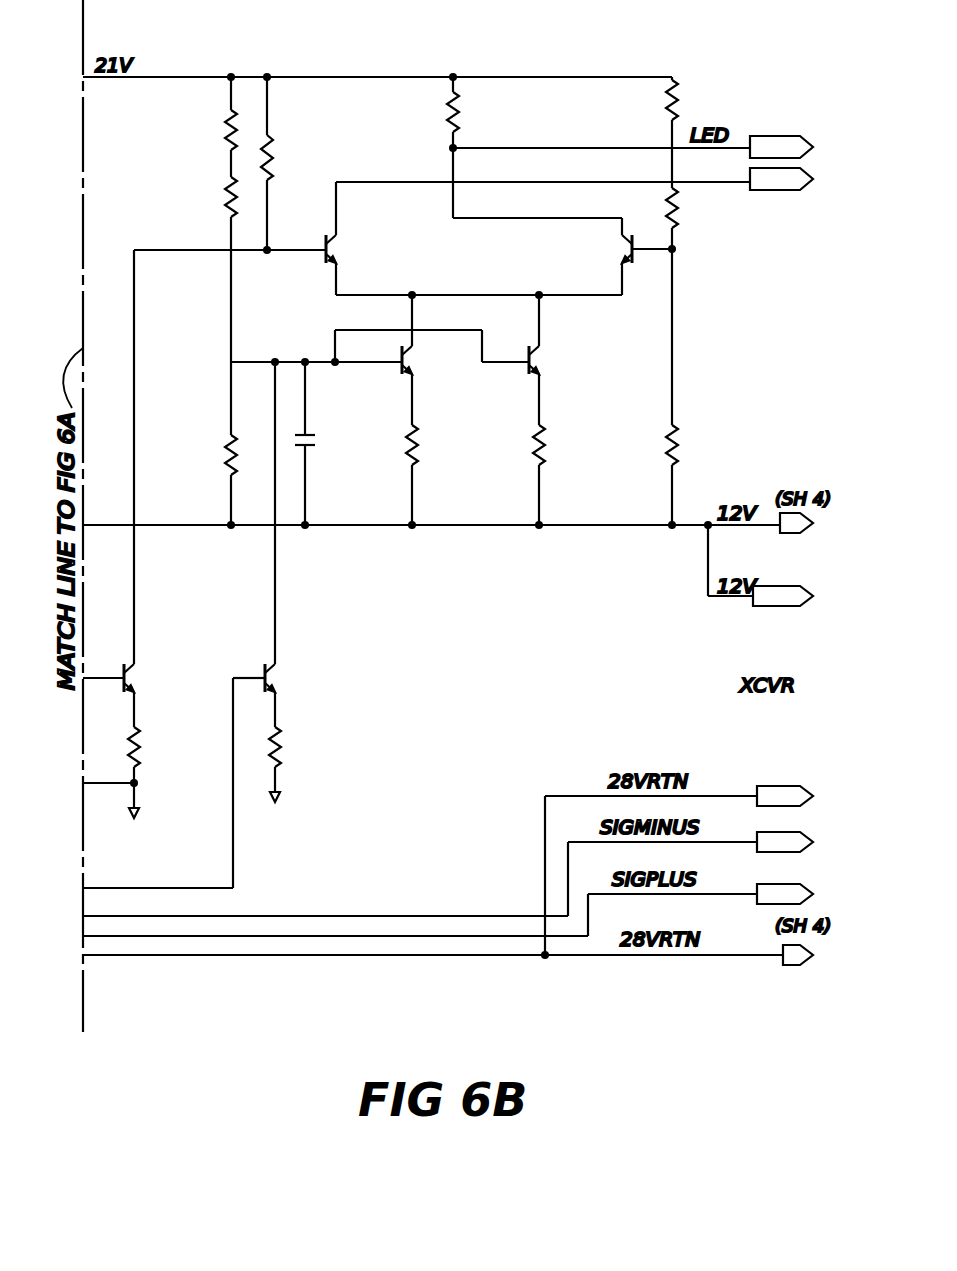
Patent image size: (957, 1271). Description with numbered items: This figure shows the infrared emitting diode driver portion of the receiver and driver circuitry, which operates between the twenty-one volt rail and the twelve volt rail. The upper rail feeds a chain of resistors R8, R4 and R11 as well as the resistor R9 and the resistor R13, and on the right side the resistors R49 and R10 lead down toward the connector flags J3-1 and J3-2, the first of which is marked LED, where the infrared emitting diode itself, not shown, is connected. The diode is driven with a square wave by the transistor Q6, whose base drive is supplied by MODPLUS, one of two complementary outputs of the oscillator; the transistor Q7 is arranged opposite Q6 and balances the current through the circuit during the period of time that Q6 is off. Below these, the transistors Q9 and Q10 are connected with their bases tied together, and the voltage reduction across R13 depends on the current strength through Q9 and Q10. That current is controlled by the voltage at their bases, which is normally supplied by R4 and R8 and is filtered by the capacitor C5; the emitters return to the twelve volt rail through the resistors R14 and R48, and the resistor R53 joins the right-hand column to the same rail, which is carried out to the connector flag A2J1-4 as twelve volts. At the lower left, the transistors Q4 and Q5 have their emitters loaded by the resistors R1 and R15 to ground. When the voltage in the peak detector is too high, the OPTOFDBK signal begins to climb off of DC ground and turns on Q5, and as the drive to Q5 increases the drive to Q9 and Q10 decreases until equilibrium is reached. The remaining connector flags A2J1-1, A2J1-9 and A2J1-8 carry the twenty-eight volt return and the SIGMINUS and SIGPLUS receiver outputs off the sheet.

The resistor R8 is at (216, 123).
The resistor R4 is at (216, 190).
The resistor R9 1.2K R9 is at (292, 157).
The resistor R13 is at (505, 108).
The resistor R49 100 ohm R49 is at (697, 97).
The resistor R10 100 ohm R10 is at (696, 208).
The resistor R53 220 ohm R53 is at (697, 444).
The resistor R14 10 ohm 1W 5% R14 is at (466, 442).
The resistor R48 10 ohm 1W 5% R48 is at (593, 444).
The resistor R11 100 ohm R11 is at (211, 451).
The capacitor C5 0.1uF 50V C5 is at (340, 440).
The resistor R1 1.2K R1 is at (115, 742).
The resistor R15 220 ohm CRCW1206-220JT1 R15 is at (372, 741).
The transistor Q6 is at (369, 248).
The transistor Q7 is at (587, 248).
The transistor Q9 is at (444, 358).
The transistor Q10 is at (573, 360).
The transistor Q4 BCW65C Q4 is at (167, 676).
The transistor Q5 is at (309, 676).
The connector J3 pin 1 (LED) J3-1 is at (781, 147).
The connector J3 pin 2 J3-2 is at (781, 179).
The connector A2J1 pin 4 (12V) A2J1-4 is at (787, 583).
The connector A2J1 pin 1 (28VRTN) A2J1-1 is at (788, 782).
The connector A2J1 pin 9 (SIGMINUS) A2J1-9 is at (788, 828).
The connector A2J1 pin 8 (SIGPLUS) A2J1-8 is at (788, 879).